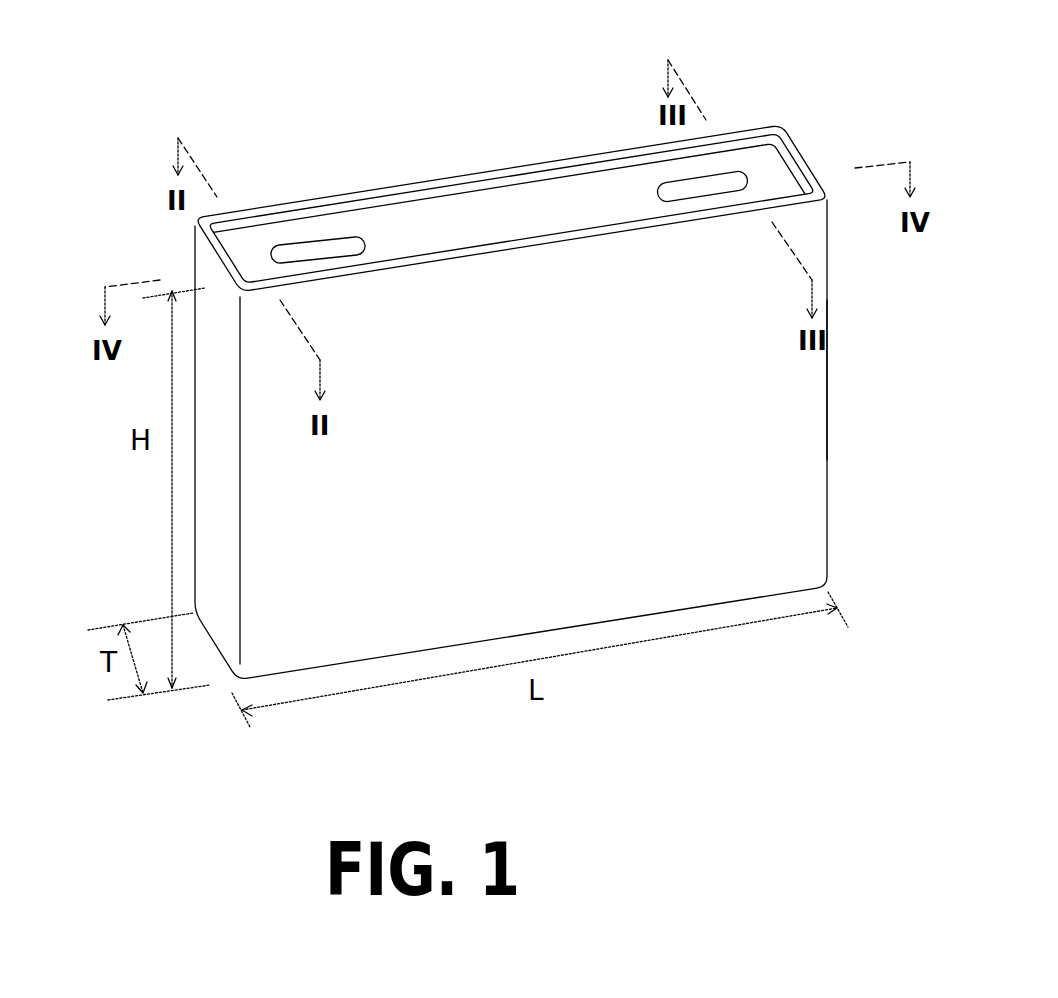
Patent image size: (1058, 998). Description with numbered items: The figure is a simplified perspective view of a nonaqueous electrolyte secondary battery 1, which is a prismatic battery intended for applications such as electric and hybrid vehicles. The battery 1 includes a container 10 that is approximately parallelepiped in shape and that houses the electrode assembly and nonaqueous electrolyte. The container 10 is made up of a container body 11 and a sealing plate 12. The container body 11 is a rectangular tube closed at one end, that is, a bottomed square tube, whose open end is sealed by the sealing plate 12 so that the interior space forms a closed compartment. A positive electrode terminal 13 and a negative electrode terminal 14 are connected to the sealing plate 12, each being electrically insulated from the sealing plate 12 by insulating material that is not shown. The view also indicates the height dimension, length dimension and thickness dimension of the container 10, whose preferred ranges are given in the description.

The nonaqueous electrolyte secondary battery 1 is at (484, 145).
The container 10 is at (829, 474).
The container body 11 is at (829, 381).
The sealing plate 12 is at (400, 222).
The positive electrode terminal 13 is at (313, 246).
The negative electrode terminal 14 is at (673, 187).